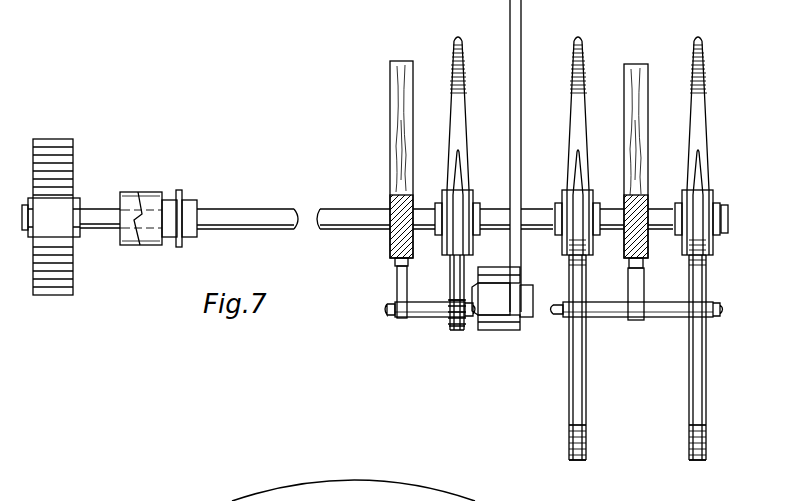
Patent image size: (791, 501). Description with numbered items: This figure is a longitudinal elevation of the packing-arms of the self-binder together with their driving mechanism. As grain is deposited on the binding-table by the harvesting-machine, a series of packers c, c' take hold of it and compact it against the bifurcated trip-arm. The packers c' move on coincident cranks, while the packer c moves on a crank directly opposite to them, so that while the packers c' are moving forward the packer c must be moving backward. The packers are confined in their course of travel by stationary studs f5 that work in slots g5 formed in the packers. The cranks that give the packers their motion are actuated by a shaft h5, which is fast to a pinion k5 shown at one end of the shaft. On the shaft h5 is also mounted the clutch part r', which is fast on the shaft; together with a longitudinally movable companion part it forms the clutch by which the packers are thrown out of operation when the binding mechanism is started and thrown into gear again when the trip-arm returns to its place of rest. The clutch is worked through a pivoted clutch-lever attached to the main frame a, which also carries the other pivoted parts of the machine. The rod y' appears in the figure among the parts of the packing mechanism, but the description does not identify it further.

The pinion k5 is at (51, 205).
The shaft h5 is at (189, 207).
The clutch part r' is at (158, 207).
The main frame a is at (517, 190).
The packer c is at (457, 171).
The rod y' is at (502, 165).
The packers c' is at (637, 235).
The stationary studs f5 is at (554, 298).
The slots g5 is at (588, 380).